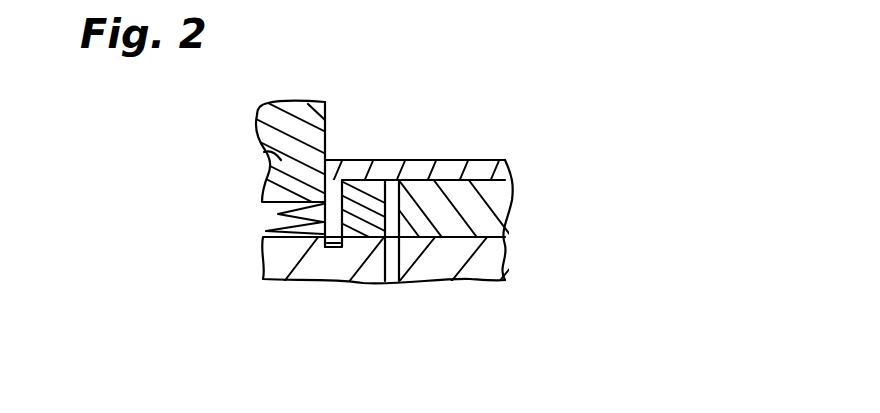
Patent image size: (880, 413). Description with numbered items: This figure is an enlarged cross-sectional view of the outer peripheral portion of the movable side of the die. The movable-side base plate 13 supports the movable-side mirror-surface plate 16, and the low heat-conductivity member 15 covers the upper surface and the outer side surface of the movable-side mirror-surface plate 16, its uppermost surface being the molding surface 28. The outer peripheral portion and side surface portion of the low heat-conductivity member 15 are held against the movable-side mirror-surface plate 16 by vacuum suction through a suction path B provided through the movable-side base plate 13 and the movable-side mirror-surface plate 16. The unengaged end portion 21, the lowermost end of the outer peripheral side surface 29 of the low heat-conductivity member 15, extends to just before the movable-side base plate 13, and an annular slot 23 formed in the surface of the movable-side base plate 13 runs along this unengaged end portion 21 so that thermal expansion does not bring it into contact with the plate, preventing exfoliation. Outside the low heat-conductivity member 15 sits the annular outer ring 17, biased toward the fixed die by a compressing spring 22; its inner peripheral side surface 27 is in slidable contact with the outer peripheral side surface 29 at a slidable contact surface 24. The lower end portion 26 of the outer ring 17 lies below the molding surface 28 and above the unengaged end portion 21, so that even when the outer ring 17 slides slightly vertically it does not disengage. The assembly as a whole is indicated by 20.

The movable-side base plate 13 is at (478, 260).
The low heat-conductivity member 15 is at (490, 172).
The movable-side mirror-surface plate 16 is at (473, 212).
The outer ring 17 is at (256, 124).
The laminated body 20 is at (449, 225).
The unengaged end portion 21 is at (362, 239).
The compressing spring 22 is at (285, 228).
The annular slot 23 is at (331, 249).
The slidable contact surface 24 is at (266, 163).
The lower end portion 26 is at (276, 213).
The inner peripheral side surface 27 is at (328, 130).
The molding surface 28 is at (485, 158).
The outer peripheral side surface 29 is at (324, 249).
The suction path B is at (393, 267).